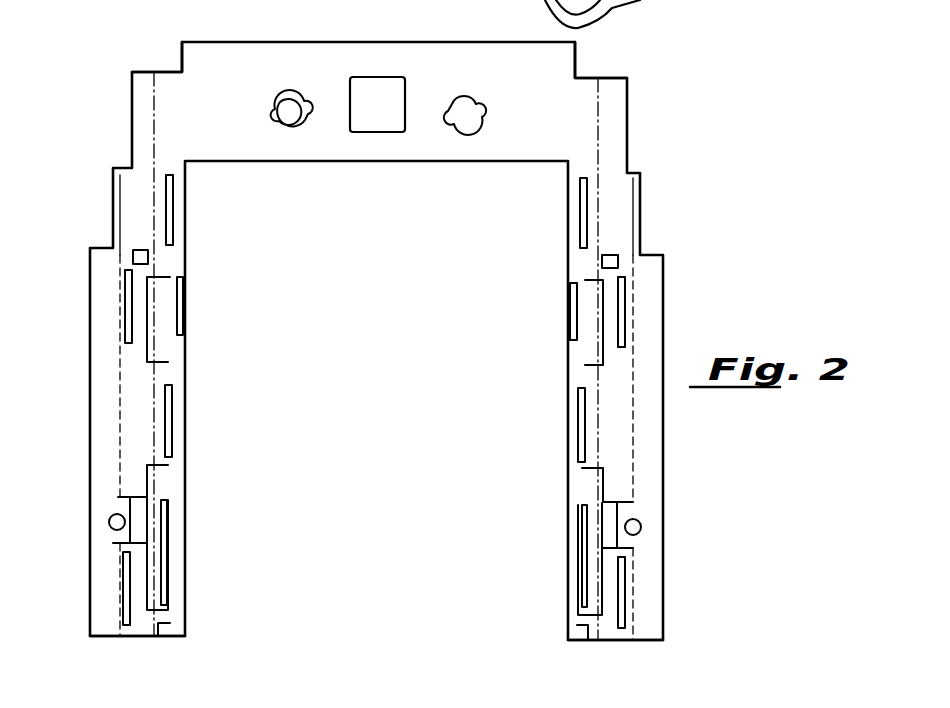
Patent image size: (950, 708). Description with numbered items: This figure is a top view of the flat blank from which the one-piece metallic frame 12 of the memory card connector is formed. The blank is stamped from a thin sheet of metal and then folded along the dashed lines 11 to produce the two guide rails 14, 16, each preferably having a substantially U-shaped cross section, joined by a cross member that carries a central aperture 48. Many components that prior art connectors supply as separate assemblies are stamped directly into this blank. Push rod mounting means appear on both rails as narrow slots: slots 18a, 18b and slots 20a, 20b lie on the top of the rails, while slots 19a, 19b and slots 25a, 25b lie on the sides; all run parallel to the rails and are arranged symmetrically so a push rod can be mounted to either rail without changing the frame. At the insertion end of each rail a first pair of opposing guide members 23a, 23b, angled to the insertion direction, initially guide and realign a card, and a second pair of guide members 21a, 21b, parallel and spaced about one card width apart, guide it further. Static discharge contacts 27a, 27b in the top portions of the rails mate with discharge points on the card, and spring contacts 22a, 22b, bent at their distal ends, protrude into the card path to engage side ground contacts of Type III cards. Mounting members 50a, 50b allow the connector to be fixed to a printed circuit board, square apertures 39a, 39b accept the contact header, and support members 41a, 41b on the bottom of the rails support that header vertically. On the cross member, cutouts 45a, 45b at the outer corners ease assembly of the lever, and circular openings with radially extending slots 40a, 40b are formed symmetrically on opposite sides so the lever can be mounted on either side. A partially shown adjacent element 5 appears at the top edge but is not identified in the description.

The adjacent component 5 is at (615, 8).
The dashed lines 11 is at (155, 110).
The one-piece metallic frame 12 is at (432, 43).
The guide rail 14 is at (128, 637).
The guide rail 16 is at (612, 643).
The slot 18a is at (173, 222).
The slot 18b is at (580, 208).
The slot 19a is at (124, 304).
The slot 19b is at (623, 315).
The slot 20a is at (172, 420).
The slot 20b is at (580, 410).
The second guide member 21a is at (163, 349).
The second guide member 21b is at (590, 328).
The spring contact 22a is at (158, 545).
The spring contact 22b is at (585, 543).
The first guide member 23a is at (165, 630).
The first guide member 23b is at (575, 628).
The slot 25a is at (123, 590).
The slot 25b is at (630, 597).
The static discharge contact 27a is at (183, 300).
The static discharge contact 27b is at (572, 295).
The square aperture 39a is at (135, 252).
The square aperture 39b is at (613, 255).
The circular opening with radially extending slots 40a is at (282, 102).
The circular opening with radially extending slots 40b is at (470, 105).
The support member 41a is at (113, 178).
The support member 41b is at (640, 183).
The cutout 45a is at (170, 55).
The cutout 45b is at (598, 66).
The aperture 48 is at (365, 77).
The mounting member 50a is at (118, 502).
The mounting member 50b is at (630, 510).